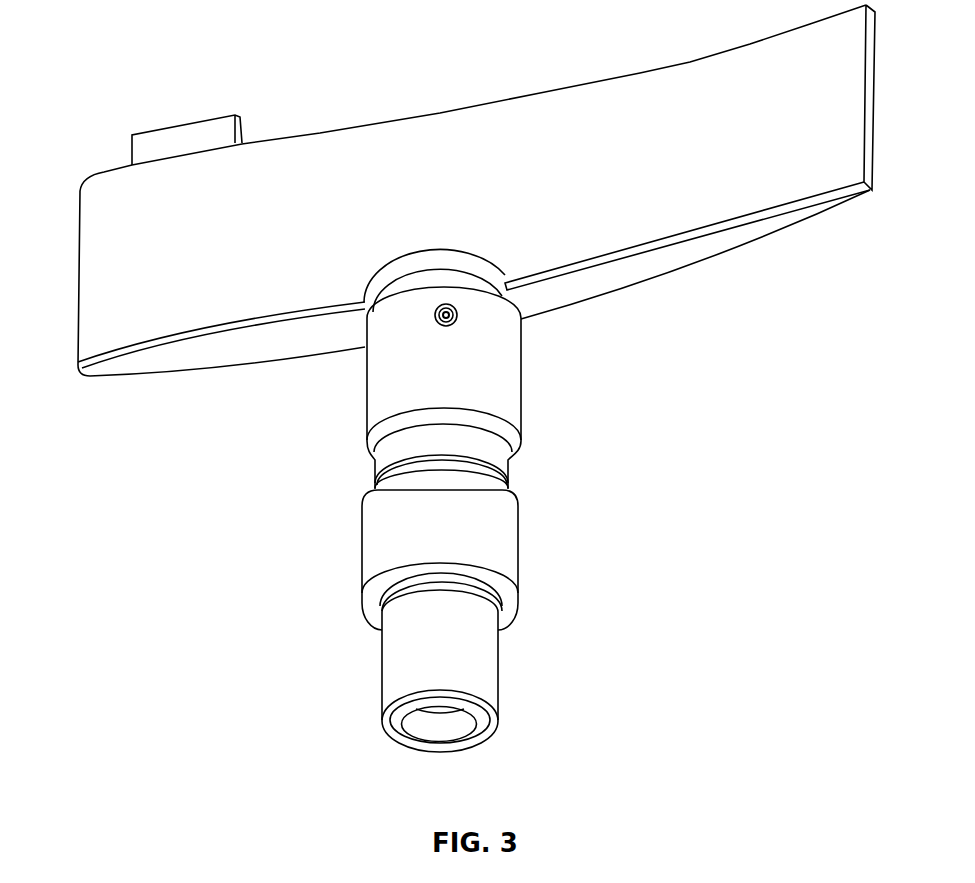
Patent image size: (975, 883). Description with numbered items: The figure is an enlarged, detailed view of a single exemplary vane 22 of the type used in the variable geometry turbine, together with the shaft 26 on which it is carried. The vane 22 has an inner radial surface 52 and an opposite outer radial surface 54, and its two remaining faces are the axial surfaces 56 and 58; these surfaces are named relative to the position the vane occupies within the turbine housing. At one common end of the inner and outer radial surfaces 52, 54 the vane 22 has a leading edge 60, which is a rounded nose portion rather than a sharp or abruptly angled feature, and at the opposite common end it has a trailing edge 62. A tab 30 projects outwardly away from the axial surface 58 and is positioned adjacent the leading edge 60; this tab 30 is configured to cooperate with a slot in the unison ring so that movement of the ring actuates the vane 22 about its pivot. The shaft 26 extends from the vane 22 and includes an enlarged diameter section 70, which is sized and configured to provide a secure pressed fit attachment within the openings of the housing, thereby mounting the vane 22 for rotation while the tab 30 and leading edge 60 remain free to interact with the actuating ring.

The vane 22 is at (293, 45).
The shaft 26 is at (607, 475).
The tab 30 is at (185, 142).
The inner radial surface 52 is at (633, 97).
The outer radial surface 54 is at (252, 374).
The axial surface 56 is at (177, 377).
The axial surface 58 is at (422, 112).
The leading edge 60 is at (78, 282).
The trailing edge 62 is at (876, 106).
The enlarged diameter section 70 is at (520, 557).